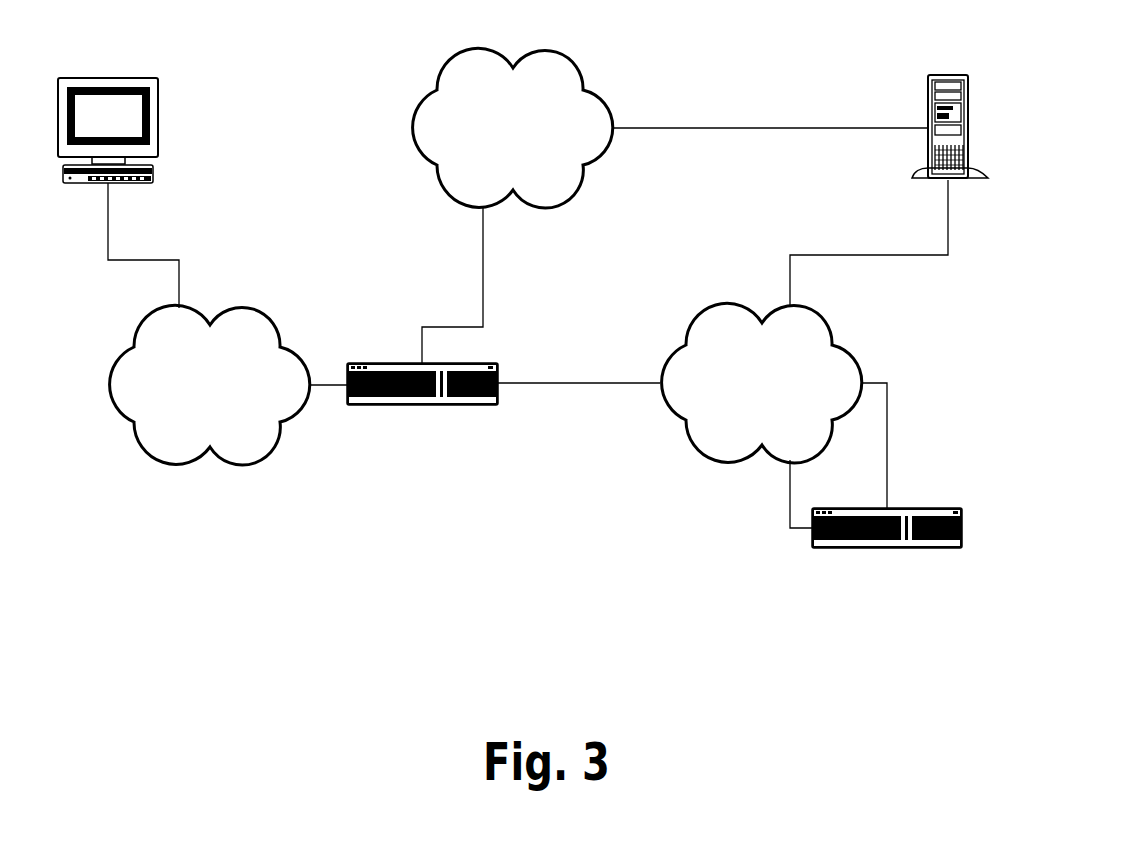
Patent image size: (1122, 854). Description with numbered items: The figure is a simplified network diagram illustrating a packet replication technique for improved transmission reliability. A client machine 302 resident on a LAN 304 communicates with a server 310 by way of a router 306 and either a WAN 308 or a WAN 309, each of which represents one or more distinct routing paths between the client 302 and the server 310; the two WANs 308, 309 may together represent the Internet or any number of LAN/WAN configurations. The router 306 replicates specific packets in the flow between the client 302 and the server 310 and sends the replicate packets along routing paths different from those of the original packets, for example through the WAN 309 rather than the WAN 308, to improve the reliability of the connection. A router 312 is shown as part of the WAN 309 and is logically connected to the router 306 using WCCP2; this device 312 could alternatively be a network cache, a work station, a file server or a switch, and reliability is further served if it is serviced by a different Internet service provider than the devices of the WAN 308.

The client machine 302 is at (159, 123).
The LAN 304 is at (240, 308).
The router 306 is at (423, 405).
The WAN 308 is at (543, 52).
The WAN 309 is at (732, 307).
The server 310 is at (970, 123).
The router 312 is at (888, 548).